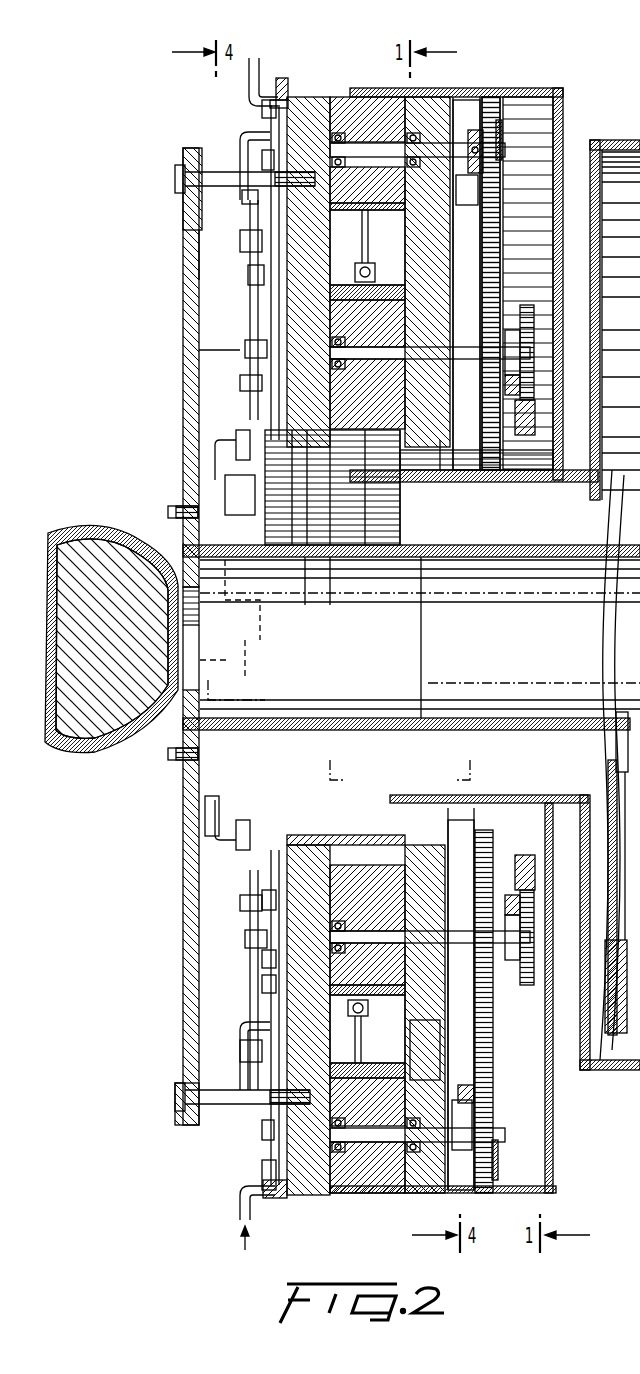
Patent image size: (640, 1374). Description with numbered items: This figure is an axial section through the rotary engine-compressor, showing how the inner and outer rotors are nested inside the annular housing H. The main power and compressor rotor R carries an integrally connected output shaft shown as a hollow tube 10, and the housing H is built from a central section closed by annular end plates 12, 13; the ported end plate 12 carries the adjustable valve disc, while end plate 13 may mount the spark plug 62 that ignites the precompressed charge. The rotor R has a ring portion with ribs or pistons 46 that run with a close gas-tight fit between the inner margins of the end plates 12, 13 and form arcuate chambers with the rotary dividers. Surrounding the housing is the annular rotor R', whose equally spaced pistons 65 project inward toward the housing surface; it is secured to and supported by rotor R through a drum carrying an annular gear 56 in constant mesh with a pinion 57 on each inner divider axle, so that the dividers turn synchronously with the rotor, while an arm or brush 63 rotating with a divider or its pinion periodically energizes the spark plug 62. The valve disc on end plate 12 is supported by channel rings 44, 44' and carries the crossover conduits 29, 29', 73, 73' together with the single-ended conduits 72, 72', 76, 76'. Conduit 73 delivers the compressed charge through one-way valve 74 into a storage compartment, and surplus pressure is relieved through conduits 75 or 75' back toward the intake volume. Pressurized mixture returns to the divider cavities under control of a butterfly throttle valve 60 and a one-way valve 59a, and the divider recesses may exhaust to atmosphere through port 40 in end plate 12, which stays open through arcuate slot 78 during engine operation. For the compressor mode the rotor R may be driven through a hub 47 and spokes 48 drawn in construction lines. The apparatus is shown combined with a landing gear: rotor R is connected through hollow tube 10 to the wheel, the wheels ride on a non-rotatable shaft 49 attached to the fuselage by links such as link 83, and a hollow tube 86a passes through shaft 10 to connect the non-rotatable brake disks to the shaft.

The hollow tube 10 is at (600, 1068).
The end plate 12 is at (262, 1172).
The end plate 13 is at (432, 1079).
The crossover conduit 29 is at (166, 176).
The crossover conduit 29' is at (216, 1131).
The port 40 is at (268, 358).
The channel ring 44 is at (293, 72).
The channel ring 44' is at (155, 814).
The rotor portion 46 is at (300, 920).
The hub 47 is at (428, 700).
The spokes 48 is at (405, 790).
The shaft 49 is at (232, 640).
The annular gear 56 is at (540, 417).
The pinion 57 is at (535, 345).
The one-way valve 59a is at (250, 318).
The butterfly throttle valve 60 is at (183, 250).
The spark plug 62 is at (438, 445).
The arm or brush 63 is at (540, 383).
The piston 65 is at (355, 130).
The conduit 72 is at (228, 1219).
The conduit 72' is at (240, 84).
The crossover conduit 73 is at (228, 156).
The crossover conduit 73' is at (202, 1056).
The one-way valve 74 is at (242, 197).
The conduit 75 is at (410, 1032).
The conduit 75' is at (498, 181).
The conduit 76 is at (177, 455).
The conduit 76' is at (177, 825).
The arcuate slot 78 is at (215, 360).
The link 83 is at (95, 722).
The hollow tube 86a is at (510, 720).
The annular housing H is at (474, 1097).
The main power and compressor rotor R is at (389, 545).
The annular rotor R' is at (494, 265).